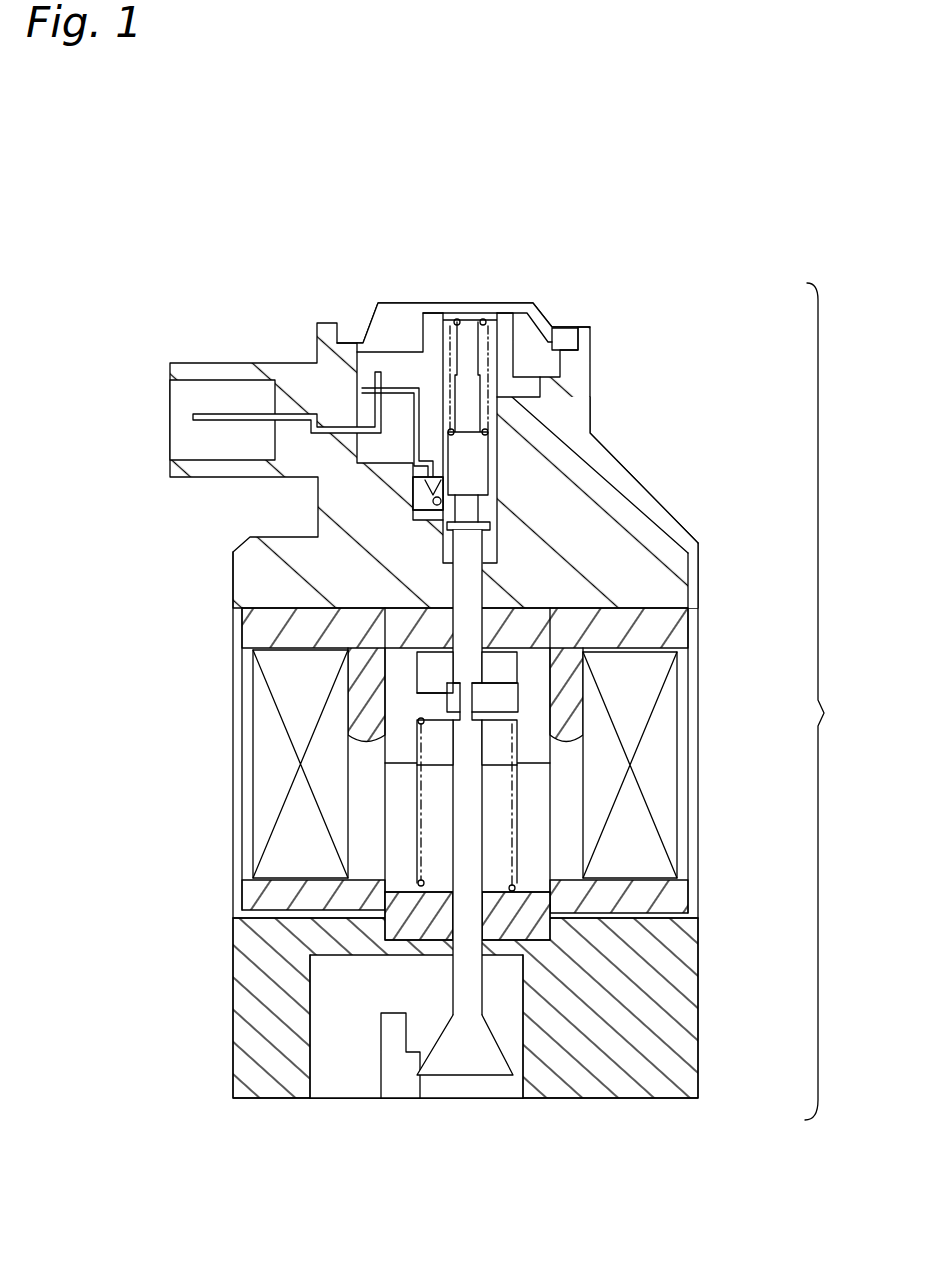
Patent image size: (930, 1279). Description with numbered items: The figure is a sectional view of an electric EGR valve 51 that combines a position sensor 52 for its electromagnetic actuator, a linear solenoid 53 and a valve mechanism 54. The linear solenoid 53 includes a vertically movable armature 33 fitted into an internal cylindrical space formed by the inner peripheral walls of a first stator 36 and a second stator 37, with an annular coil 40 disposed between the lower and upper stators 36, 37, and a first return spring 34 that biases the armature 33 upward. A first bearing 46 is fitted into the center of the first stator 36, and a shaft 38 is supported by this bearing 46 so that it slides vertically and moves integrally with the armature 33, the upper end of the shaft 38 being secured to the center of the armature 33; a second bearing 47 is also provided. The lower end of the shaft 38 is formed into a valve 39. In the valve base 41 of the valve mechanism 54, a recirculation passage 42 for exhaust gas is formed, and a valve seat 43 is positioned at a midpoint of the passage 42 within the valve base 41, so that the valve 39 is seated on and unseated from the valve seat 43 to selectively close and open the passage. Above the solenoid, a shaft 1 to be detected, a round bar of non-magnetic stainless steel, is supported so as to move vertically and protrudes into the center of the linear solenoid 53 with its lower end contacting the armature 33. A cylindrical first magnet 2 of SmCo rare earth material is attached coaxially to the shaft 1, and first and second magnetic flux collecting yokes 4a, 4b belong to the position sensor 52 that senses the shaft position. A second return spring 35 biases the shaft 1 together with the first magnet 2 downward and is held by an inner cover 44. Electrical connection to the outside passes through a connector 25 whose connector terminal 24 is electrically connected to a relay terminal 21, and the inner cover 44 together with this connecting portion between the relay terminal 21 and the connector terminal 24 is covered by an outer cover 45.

The shaft to be detected 1 is at (469, 543).
The first magnet 2 is at (489, 445).
The first magnetic flux collecting yoke 4a is at (270, 547).
The second magnetic flux collecting yoke 4b is at (420, 487).
The relay terminal 21 is at (412, 445).
The connector terminal 24 is at (295, 413).
The connector 25 is at (202, 372).
The armature 33 is at (417, 693).
The first return spring 34 is at (517, 822).
The second return spring 35 is at (481, 350).
The first stator 36 is at (663, 887).
The second stator 37 is at (678, 637).
The shaft 38 is at (474, 984).
The valve 39 is at (479, 1044).
The annular coil 40 is at (262, 679).
The valve base 41 is at (263, 930).
The recirculation passage 42 is at (328, 1060).
The valve seat 43 is at (417, 1042).
The inner cover 44 is at (437, 318).
The outer cover 45 is at (481, 318).
The first bearing 46 is at (430, 901).
The second bearing 47 is at (560, 614).
The electric EGR valve 51 is at (870, 737).
The position sensor 52 is at (633, 322).
The linear solenoid 53 is at (782, 797).
The valve mechanism 54 is at (712, 938).